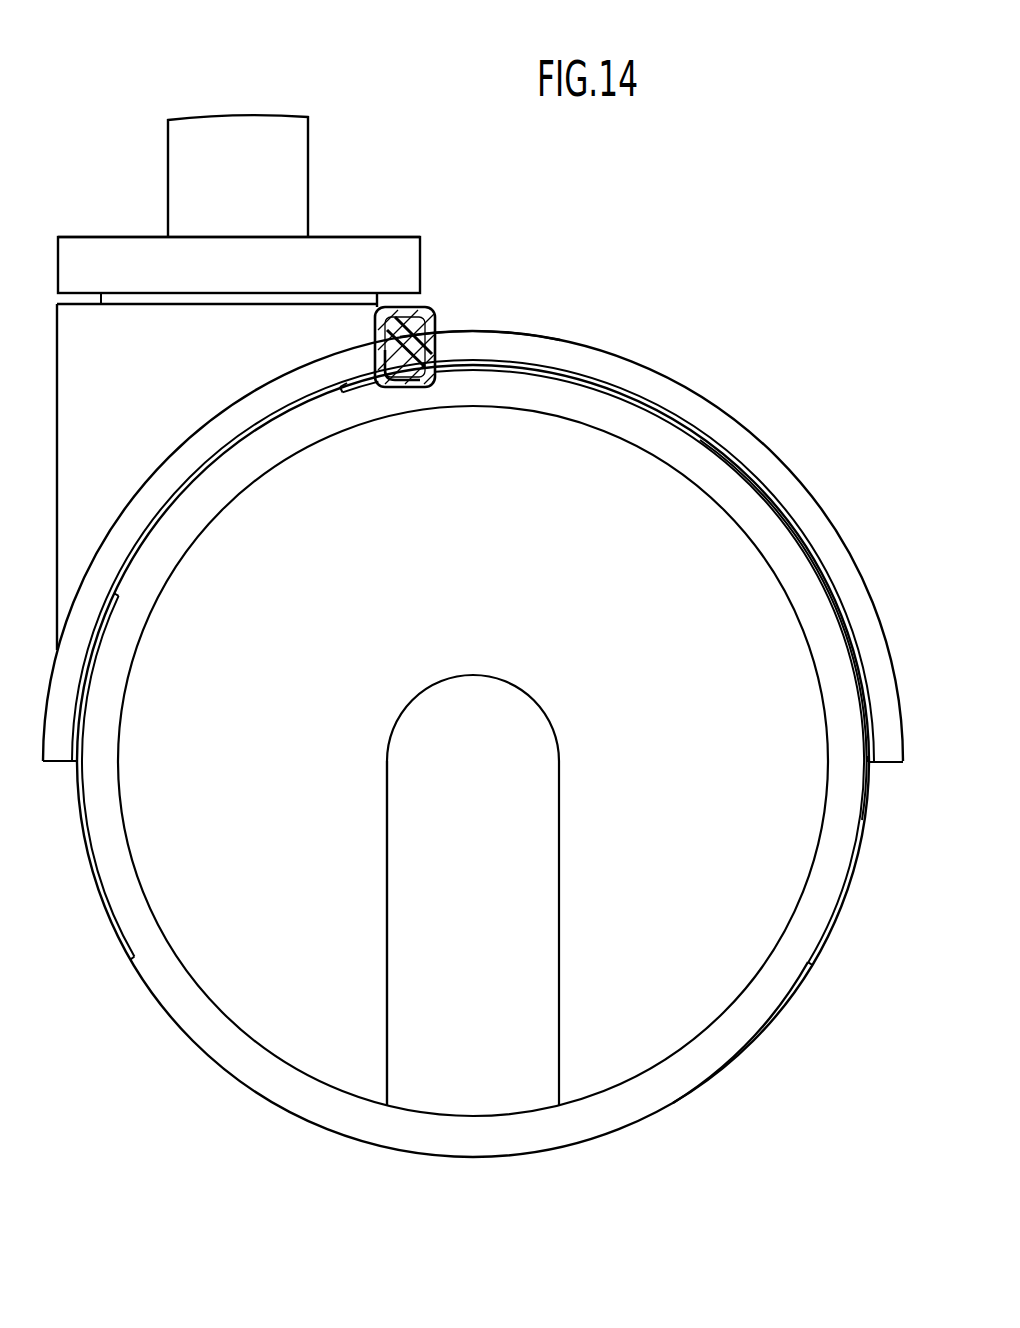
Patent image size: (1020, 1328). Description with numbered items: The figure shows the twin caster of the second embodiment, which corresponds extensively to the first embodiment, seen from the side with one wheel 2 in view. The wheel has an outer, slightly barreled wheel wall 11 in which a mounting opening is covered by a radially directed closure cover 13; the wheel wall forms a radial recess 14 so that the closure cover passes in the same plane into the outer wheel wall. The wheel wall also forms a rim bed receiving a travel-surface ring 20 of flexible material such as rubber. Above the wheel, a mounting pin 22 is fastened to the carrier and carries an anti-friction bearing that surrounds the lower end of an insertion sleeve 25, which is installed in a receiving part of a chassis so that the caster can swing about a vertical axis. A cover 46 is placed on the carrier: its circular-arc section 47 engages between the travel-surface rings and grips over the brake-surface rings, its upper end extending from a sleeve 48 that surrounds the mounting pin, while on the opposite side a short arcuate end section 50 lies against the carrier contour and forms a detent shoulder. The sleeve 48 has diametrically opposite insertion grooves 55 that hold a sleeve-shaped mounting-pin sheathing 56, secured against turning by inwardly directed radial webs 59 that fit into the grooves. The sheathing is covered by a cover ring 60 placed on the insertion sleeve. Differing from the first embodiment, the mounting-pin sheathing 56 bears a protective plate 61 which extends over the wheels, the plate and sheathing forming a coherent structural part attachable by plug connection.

The wheel 2 is at (673, 1103).
The wheel wall 11 is at (283, 983).
The closure cover 13 is at (473, 1072).
The radial recess 14 is at (382, 995).
The travel-surface ring 20 is at (762, 1018).
The mounting pin 22 is at (352, 192).
The insertion sleeve 25 is at (293, 160).
The cover 46 is at (862, 840).
The section 47 is at (723, 455).
The sleeve 48 is at (433, 353).
The end section 50 is at (108, 913).
The insertion grooves 55 is at (475, 330).
The mounting-pin sheathing 56 is at (288, 345).
The radial webs 59 is at (423, 292).
The cover ring 60 is at (328, 253).
The protective plate 61 is at (650, 365).